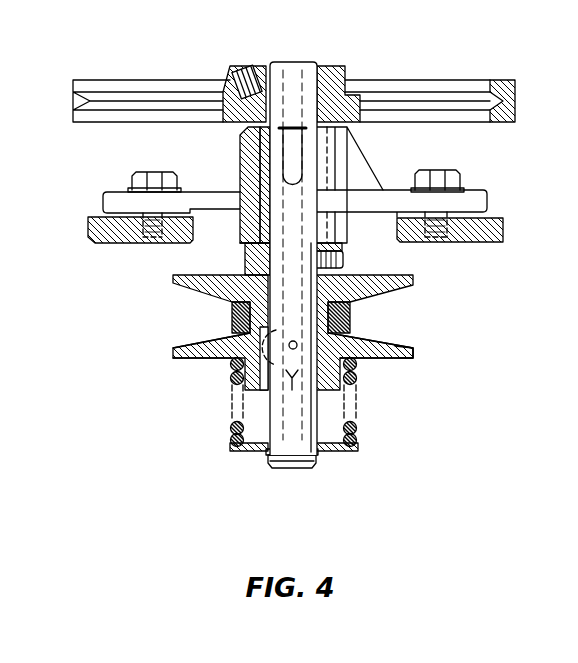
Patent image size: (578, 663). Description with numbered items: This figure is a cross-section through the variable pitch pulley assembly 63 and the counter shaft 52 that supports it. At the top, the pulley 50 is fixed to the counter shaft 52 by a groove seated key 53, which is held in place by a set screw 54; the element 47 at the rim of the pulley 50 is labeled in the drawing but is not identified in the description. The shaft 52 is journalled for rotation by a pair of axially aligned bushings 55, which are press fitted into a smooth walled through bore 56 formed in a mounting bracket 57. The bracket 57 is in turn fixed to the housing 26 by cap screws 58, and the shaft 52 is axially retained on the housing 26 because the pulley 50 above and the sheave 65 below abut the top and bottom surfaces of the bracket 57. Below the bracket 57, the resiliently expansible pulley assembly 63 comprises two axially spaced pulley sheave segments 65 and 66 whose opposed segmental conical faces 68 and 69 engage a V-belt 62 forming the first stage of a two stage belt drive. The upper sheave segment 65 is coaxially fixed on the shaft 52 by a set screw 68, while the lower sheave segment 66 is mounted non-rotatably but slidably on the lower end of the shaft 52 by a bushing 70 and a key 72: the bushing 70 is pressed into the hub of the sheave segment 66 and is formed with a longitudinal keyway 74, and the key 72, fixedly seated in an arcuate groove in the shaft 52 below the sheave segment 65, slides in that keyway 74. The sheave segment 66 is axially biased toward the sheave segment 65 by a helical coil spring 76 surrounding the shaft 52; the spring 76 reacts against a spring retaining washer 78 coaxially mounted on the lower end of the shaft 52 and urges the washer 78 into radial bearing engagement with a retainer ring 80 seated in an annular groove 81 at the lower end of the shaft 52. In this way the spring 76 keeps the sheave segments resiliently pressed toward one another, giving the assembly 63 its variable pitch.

The housing 26 is at (95, 243).
The pulley rim 47 is at (516, 101).
The pulley 50 is at (436, 80).
The counter shaft 52 is at (269, 252).
The groove seated key 53 is at (240, 121).
The set screw 54 is at (237, 70).
The bushings 55 is at (252, 118).
The through bore 56 is at (261, 166).
The mounting bracket 57 is at (490, 198).
The cap screws 58 is at (150, 170).
The V-belt 62 is at (351, 319).
The variable pitch pulley assembly 63 is at (152, 286).
The pulley sheave segment 65 is at (410, 275).
The pulley sheave segment 66 is at (426, 356).
The set screw 68 is at (343, 257).
The segmental conical face 69 is at (400, 347).
The bushing 70 is at (322, 390).
The key 72 is at (232, 316).
The longitudinal keyway 74 is at (262, 389).
The helical coil spring 76 is at (358, 443).
The spring retaining washer 78 is at (345, 452).
The retainer ring 80 is at (263, 453).
The annular groove 81 is at (318, 462).